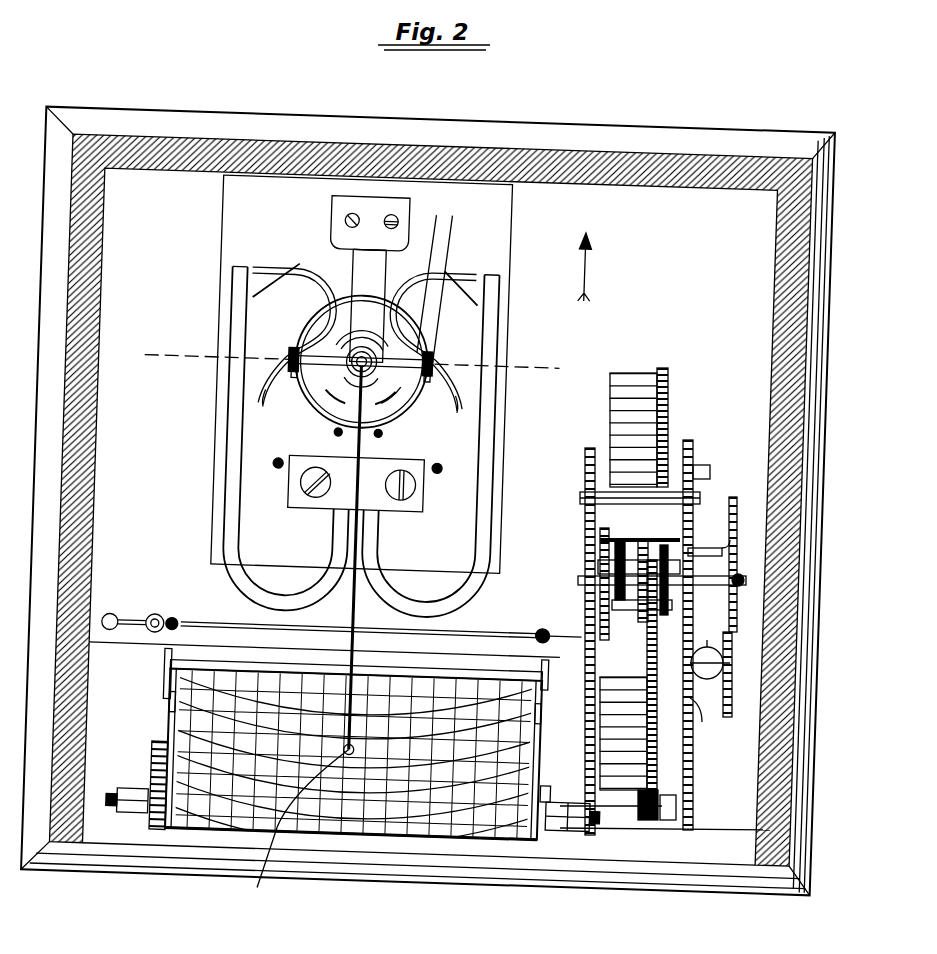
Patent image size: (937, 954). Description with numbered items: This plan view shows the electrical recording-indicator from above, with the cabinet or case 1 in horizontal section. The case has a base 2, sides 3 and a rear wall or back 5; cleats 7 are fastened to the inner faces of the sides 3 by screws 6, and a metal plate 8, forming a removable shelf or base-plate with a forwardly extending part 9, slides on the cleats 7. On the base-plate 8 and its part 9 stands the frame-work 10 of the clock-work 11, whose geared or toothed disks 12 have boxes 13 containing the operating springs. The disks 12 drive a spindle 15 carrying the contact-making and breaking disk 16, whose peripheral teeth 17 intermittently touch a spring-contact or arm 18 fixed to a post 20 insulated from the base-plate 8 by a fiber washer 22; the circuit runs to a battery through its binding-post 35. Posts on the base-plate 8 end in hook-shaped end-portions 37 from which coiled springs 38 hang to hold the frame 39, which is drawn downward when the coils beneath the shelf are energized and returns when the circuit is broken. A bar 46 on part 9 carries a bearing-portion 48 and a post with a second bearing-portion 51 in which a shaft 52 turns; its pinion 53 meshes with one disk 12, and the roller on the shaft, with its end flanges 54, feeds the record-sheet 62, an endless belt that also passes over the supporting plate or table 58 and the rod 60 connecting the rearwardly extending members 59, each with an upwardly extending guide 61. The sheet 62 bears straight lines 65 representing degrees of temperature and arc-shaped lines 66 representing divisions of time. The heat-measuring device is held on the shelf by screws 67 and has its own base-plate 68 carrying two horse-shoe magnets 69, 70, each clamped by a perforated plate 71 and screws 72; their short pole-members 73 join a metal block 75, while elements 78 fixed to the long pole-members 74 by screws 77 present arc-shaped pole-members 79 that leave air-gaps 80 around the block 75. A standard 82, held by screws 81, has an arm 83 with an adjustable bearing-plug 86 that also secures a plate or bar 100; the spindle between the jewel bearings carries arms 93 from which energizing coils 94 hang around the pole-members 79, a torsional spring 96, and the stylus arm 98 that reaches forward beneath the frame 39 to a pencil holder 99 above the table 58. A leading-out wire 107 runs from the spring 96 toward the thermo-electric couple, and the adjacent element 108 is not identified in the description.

The cabinet or case 1 is at (416, 894).
The base 2 is at (513, 900).
The sides 3 is at (82, 300).
The rear wall or back 5 is at (678, 147).
The screws 6 is at (346, 362).
The cleats 7 is at (599, 267).
The shelf or base-plate 8 is at (151, 556).
The forwardly extending part 9 is at (700, 832).
The frame-work 10 is at (588, 450).
The clock-work 11 is at (531, 574).
The geared or toothed disks 12 is at (668, 385).
The boxes 13 is at (638, 380).
The spindle 15 is at (740, 587).
The contact-making and breaking disk 16 is at (700, 550).
The serrations or teeth 17 is at (733, 500).
The spring-contact or arm 18 is at (731, 712).
The standard or post 20 is at (709, 647).
The insulating washer 22 is at (703, 724).
The binding-post 35 is at (118, 608).
The hook-shaped end-portion 37 is at (360, 612).
The coiled spring 38 is at (182, 628).
The frame 39 is at (252, 636).
The bar 46 is at (622, 808).
The bearing-portion 48 is at (162, 766).
The bearing-portion 51 is at (560, 790).
The shaft or spindle 52 is at (373, 824).
The pinion 53 is at (677, 805).
The annular guides or flanges 54 is at (165, 840).
The supporting plate or table 58 is at (178, 720).
The bracket-like members 59 is at (176, 690).
The rod or bar 60 is at (188, 669).
The upwardly extending guide 61 is at (170, 672).
The record-sheet 62 is at (383, 840).
The longitudinally extending straight lines 65 is at (218, 840).
The arc-shaped lines 66 is at (347, 840).
The screws 67 is at (271, 468).
The base-plate 68 is at (215, 208).
The horse-shoe magnet 69 is at (291, 612).
The horse-shoe magnet 70 is at (421, 612).
The perforated plate 71 is at (289, 478).
The screws 72 is at (306, 500).
The short arm or pole-member 73 is at (334, 438).
The long arm or pole-member 74 is at (238, 340).
The metal block 75 is at (329, 322).
The screws 77 is at (244, 298).
The elements 78 is at (262, 272).
The arc-shaped pole-member 79 is at (320, 398).
The spaces or air-gaps 80 is at (256, 411).
The screws 81 is at (378, 217).
The post or standard 82 is at (344, 246).
The arm 83 is at (352, 275).
The screw-threaded bearing-plug 86 is at (357, 350).
The carriers or arms 93 is at (362, 351).
The energizing coils 94 is at (289, 378).
The torsional spring 96 is at (330, 348).
The arm 98 is at (360, 540).
The holder 99 is at (295, 832).
The plate or bar 100 is at (410, 410).
The leading-out circuit wire 107 is at (416, 284).
The suspension wire 108 is at (445, 230).